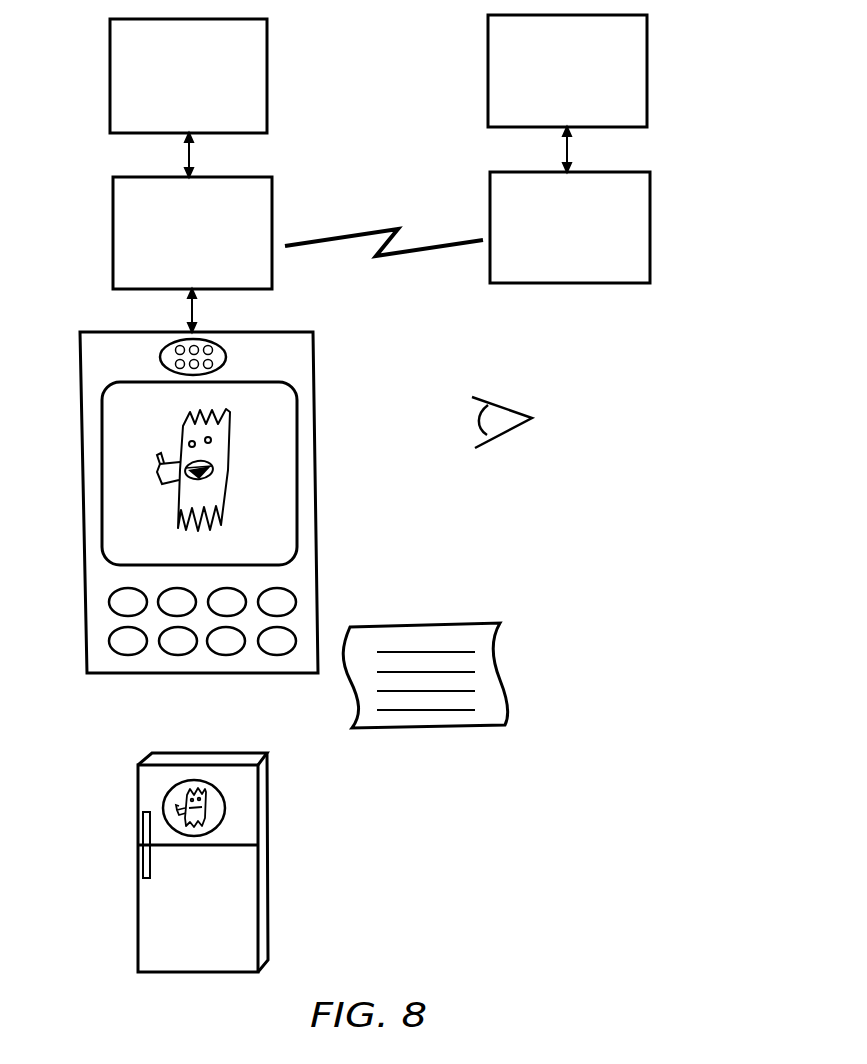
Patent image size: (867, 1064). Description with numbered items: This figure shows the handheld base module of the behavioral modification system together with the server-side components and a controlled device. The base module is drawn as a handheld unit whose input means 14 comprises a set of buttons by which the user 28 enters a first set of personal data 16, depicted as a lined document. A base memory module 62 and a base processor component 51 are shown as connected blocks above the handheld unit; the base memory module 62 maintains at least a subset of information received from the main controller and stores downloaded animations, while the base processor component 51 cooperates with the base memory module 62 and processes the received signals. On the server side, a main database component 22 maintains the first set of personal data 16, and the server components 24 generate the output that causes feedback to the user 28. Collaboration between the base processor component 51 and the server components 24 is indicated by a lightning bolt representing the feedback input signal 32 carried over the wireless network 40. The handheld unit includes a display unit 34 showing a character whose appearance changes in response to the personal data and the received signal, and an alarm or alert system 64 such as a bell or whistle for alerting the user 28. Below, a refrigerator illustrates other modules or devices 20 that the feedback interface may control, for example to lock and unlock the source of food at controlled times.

The base memory module 62 is at (110, 72).
The base processor component 51 is at (113, 236).
The main database component 22 is at (648, 53).
The server components 24 is at (650, 207).
The feedback input signal 32 is at (384, 241).
The wireless network 40 is at (384, 242).
The input means 14 is at (103, 625).
The alarm or alert system 64 is at (228, 352).
The display unit 34 is at (273, 468).
The user 28 is at (507, 432).
The first set of personal data 16 is at (508, 683).
The other modules or devices 20 is at (225, 808).